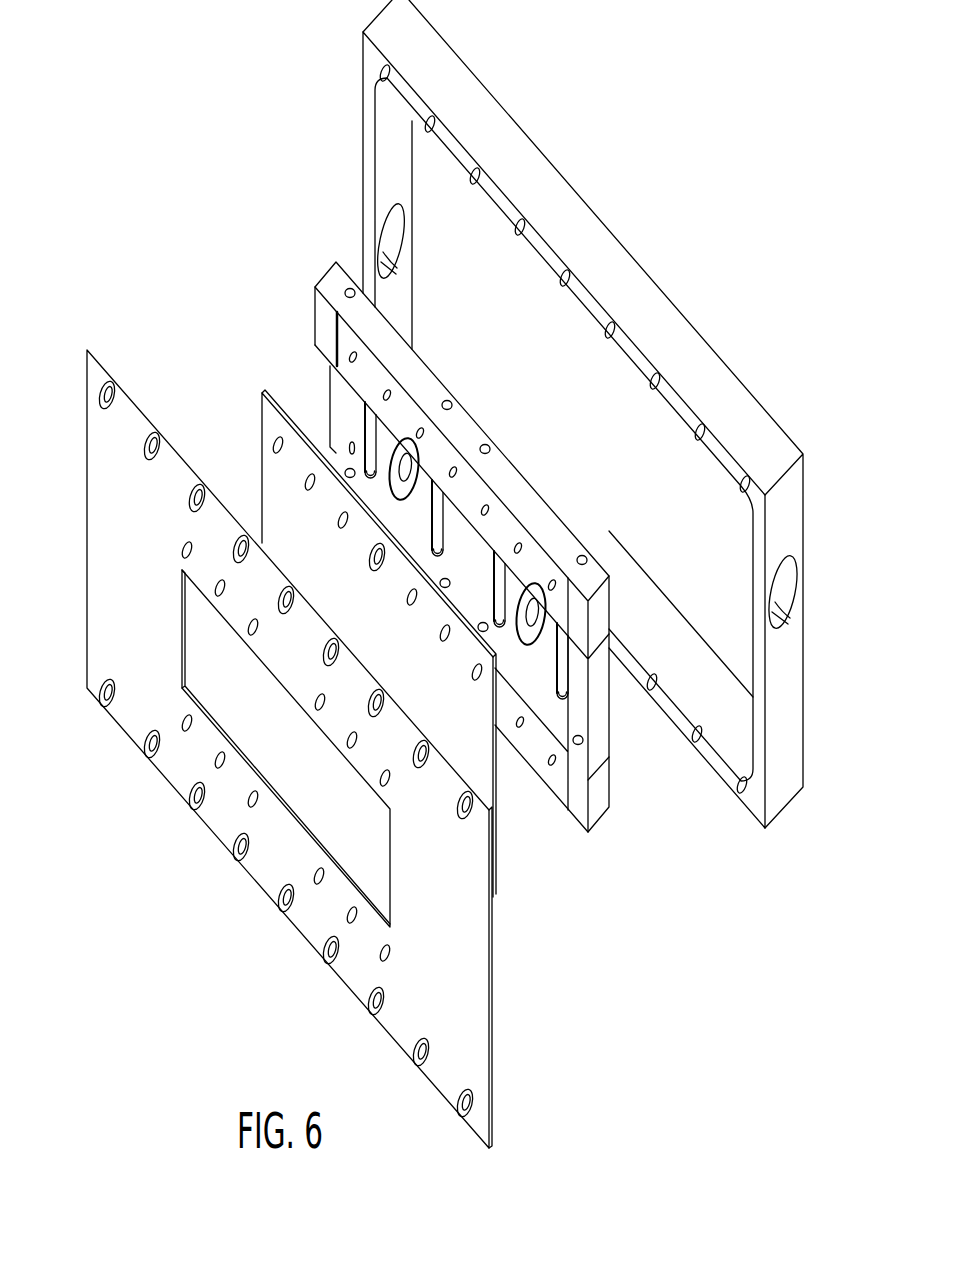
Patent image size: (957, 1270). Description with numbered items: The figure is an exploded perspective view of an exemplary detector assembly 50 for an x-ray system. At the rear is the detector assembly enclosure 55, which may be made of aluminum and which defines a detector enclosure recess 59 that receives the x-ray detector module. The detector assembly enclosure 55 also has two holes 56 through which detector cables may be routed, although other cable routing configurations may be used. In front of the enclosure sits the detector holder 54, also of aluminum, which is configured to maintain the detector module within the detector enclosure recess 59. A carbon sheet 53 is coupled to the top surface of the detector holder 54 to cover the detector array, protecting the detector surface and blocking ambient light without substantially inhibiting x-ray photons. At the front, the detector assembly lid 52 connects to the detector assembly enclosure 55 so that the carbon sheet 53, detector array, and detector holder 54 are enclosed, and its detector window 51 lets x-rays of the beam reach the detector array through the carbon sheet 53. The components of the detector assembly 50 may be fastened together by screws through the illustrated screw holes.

The detector assembly 50 is at (126, 254).
The detector window 51 is at (193, 648).
The detector assembly lid 52 is at (130, 738).
The carbon sheet 53 is at (262, 445).
The detector holder 54 is at (609, 790).
The detector assembly enclosure 55 is at (783, 810).
The holes 56 is at (384, 240).
The detector enclosure recess 59 is at (666, 457).